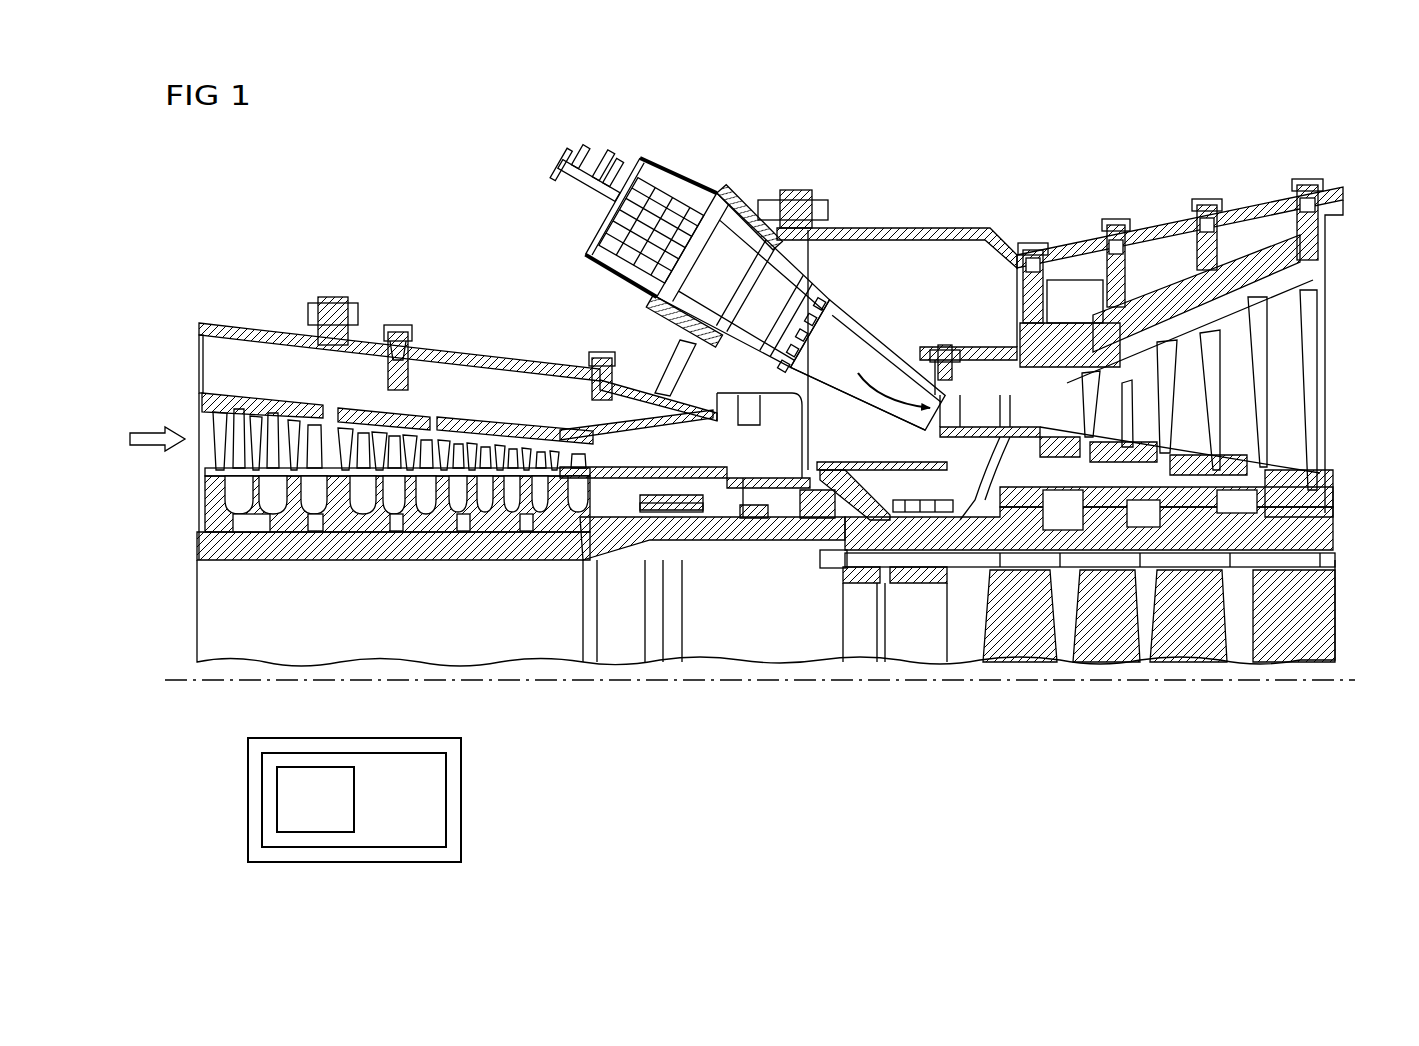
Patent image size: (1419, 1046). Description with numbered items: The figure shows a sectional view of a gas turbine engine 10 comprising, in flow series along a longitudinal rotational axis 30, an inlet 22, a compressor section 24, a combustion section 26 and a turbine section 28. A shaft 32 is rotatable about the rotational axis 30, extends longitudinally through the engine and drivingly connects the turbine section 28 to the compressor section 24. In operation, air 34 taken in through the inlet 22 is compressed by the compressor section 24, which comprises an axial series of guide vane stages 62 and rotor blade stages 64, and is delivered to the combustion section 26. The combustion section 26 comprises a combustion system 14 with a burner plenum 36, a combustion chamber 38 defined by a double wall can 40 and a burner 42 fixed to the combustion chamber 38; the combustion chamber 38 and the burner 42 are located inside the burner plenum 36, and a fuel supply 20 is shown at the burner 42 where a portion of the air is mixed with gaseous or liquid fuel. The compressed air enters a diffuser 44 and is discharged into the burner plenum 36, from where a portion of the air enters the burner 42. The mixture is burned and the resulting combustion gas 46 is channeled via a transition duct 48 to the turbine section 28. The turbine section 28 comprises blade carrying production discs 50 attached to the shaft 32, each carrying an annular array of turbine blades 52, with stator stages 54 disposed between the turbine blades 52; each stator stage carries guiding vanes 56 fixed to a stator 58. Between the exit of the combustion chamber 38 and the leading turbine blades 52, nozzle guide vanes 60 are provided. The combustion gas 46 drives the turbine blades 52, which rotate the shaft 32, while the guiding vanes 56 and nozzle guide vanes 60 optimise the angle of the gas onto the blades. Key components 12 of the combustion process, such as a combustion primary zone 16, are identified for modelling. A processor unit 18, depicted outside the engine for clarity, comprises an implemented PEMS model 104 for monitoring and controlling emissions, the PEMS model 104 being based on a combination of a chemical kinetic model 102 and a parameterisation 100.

The gas turbine engine 10 is at (400, 178).
The key component 12 is at (590, 222).
The combustion system 14 is at (728, 134).
The combustion primary zone 16 is at (716, 262).
The processor unit 18 is at (458, 786).
The fuel supply / burner lance 20 is at (560, 168).
The inlet 22 is at (180, 342).
The compressor section 24 is at (440, 335).
The combustion section 26 is at (762, 171).
The turbine section 28 is at (1153, 300).
The rotational axis 30 is at (225, 682).
The shaft 32 is at (760, 540).
The air 34 is at (153, 435).
The burner plenum 36 is at (692, 307).
The combustion chamber 38 is at (874, 371).
The double wall can 40 is at (790, 283).
The burner 42 is at (662, 210).
The diffuser 44 is at (622, 455).
The combustion gas 46 is at (875, 380).
The transition duct 48 is at (856, 332).
The blade carrying production disc 50 is at (1175, 642).
The turbine blade 52 is at (1027, 417).
The stator stage 54 is at (1305, 490).
The guiding vane 56 is at (1295, 348).
The stator 58 is at (1300, 280).
The nozzle guide vane 60 is at (965, 416).
The guide vane stage 62 is at (233, 442).
The rotor blade stage 64 is at (255, 412).
The parameterisation 100 is at (290, 818).
The chemical kinetic model 102 is at (300, 788).
The PEMS model 104 is at (425, 828).